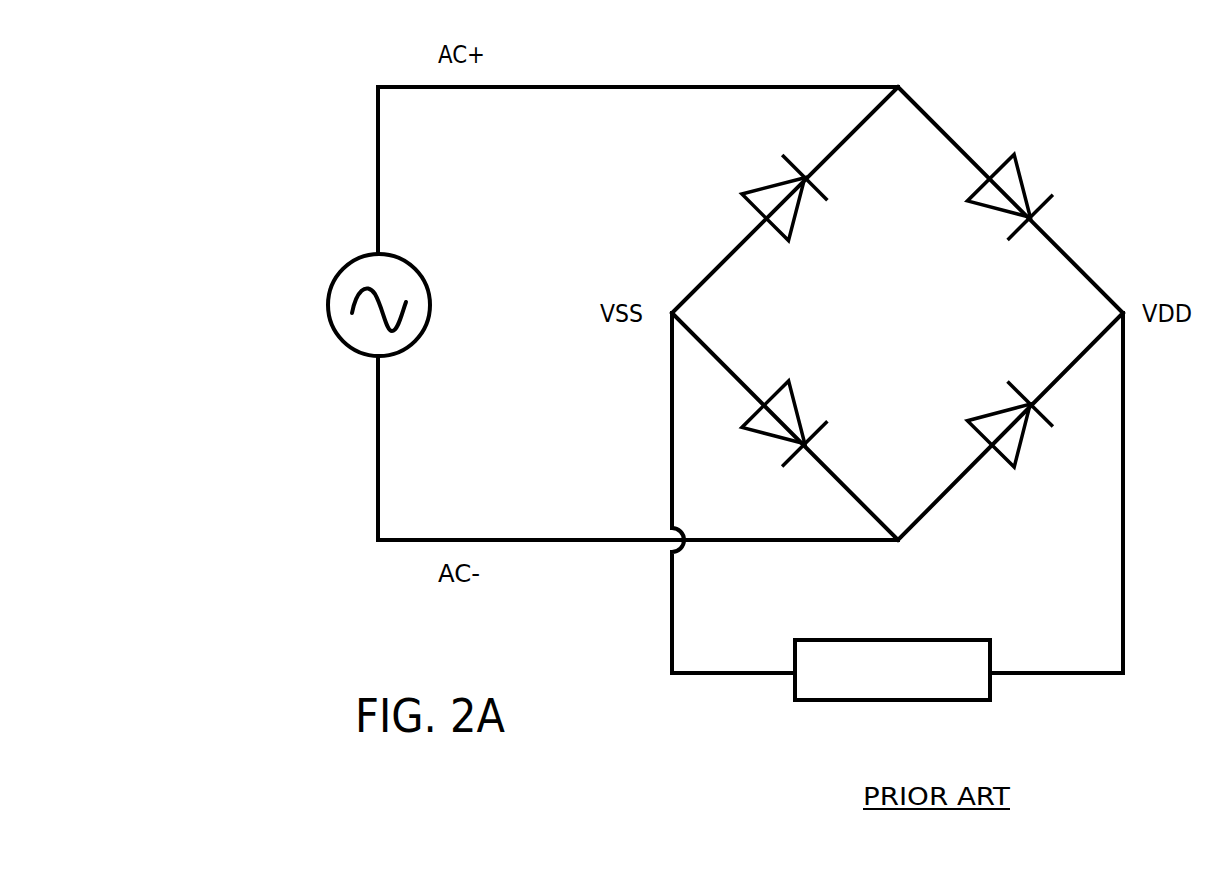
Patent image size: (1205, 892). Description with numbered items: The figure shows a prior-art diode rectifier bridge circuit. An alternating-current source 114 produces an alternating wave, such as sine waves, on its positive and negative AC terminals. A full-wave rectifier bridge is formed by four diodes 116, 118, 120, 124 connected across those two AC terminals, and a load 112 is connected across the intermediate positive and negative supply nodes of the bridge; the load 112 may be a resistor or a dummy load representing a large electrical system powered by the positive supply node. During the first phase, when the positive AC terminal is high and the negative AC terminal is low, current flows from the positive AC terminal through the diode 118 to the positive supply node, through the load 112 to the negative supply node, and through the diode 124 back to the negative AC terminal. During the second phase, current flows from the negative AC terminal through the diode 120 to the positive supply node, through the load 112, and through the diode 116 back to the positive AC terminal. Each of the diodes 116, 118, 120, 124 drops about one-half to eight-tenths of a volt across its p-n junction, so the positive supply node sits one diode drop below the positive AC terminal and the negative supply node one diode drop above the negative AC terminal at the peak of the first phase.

The load 112 is at (957, 687).
The alternating-current source 114 is at (423, 280).
The diode 116 is at (742, 194).
The diode 118 is at (967, 201).
The diode 120 is at (967, 420).
The diode 124 is at (788, 381).